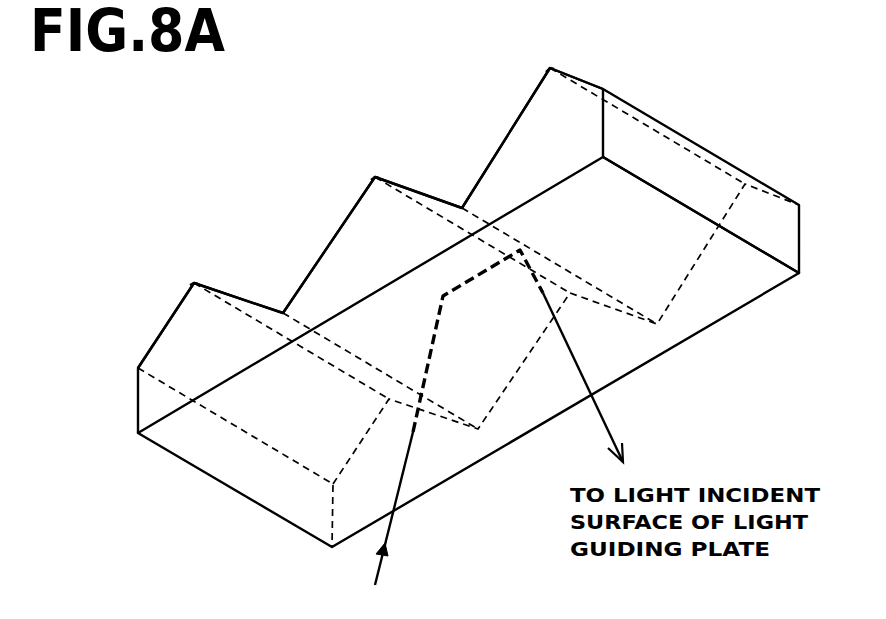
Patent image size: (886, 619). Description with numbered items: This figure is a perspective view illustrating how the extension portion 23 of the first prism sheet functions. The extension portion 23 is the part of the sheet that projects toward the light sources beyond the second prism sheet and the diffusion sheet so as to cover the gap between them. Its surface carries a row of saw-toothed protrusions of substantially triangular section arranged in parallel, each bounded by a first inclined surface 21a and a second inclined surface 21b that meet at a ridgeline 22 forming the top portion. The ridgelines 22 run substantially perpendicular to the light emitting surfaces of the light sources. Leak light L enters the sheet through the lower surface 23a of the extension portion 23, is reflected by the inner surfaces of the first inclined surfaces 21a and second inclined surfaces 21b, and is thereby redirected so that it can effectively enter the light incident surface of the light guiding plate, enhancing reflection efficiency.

The first inclined surface 21a is at (170, 322).
The second inclined surface 21b is at (248, 301).
The ridgeline 22 is at (194, 282).
The extension portion 23 is at (167, 470).
The lower surface 23a is at (255, 475).
The leak light L is at (377, 570).